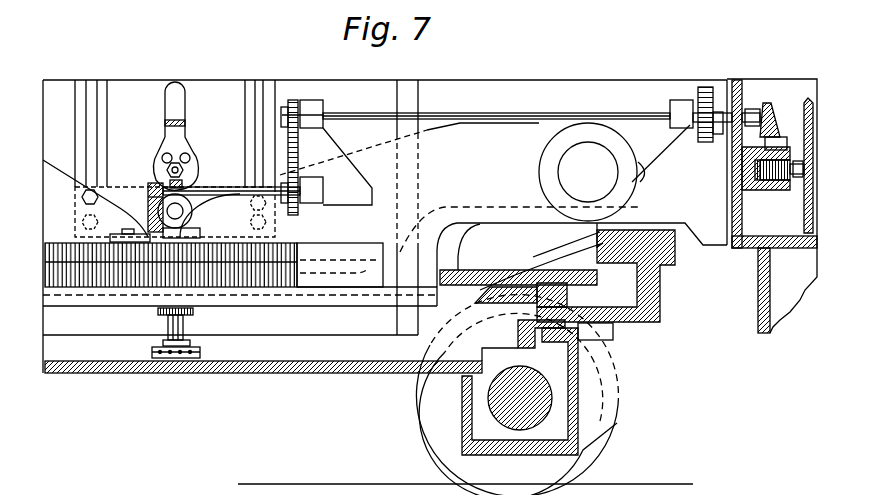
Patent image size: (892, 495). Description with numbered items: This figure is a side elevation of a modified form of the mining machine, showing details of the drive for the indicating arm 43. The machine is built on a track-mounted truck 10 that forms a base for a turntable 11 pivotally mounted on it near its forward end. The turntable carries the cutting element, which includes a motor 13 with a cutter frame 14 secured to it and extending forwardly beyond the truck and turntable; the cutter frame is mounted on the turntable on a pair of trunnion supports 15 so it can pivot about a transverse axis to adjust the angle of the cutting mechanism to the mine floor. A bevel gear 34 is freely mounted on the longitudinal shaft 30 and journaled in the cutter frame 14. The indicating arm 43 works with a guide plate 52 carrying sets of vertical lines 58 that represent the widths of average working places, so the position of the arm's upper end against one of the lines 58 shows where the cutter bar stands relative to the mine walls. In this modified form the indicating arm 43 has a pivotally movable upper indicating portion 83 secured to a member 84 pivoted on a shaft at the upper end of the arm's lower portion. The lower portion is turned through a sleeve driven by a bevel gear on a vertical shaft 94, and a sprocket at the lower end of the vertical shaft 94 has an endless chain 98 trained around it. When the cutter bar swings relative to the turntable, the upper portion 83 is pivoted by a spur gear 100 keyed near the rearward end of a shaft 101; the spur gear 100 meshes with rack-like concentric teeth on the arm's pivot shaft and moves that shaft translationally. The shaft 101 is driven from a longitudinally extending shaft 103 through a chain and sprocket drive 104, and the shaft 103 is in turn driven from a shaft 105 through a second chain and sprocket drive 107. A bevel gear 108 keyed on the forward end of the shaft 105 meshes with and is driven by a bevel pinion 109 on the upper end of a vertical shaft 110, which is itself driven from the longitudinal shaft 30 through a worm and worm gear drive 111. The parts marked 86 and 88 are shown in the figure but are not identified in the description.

The track-mounted truck 10 is at (352, 372).
The turntable 11 is at (634, 273).
The motor 13 is at (53, 79).
The cutter frame 14 is at (610, 80).
The trunnion supports 15 is at (642, 178).
The shaft 30 is at (772, 206).
The bevel gear 34 is at (808, 95).
The indicating arm 43 is at (190, 92).
The guide plate 52 is at (117, 80).
The vertical lines 58 is at (263, 80).
The upper indicating portion 83 is at (170, 108).
The member 84 is at (165, 155).
The cam disc 86 is at (155, 168).
The roller wheel 88 is at (182, 212).
The vertical shaft 94 is at (185, 321).
The endless chain 98 is at (200, 352).
The spur gear 100 is at (193, 178).
The shaft 101 is at (207, 190).
The longitudinally extending shaft 103 is at (470, 113).
The chain and sprocket drive 104 is at (302, 101).
The shaft 105 is at (740, 122).
The chain and sprocket drive 107 is at (706, 85).
The bevel gear 108 is at (763, 107).
The bevel pinion 109 is at (770, 130).
The vertical shaft 110 is at (770, 186).
The worm and worm gear drive 111 is at (795, 180).